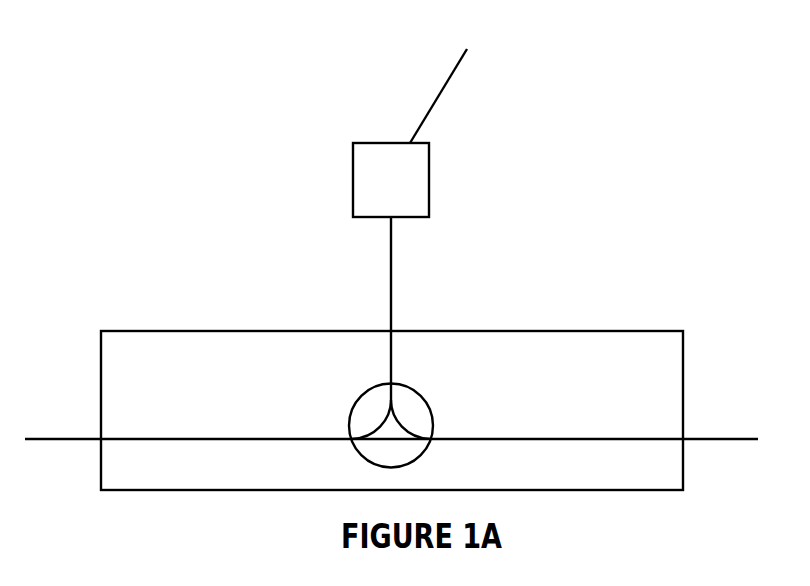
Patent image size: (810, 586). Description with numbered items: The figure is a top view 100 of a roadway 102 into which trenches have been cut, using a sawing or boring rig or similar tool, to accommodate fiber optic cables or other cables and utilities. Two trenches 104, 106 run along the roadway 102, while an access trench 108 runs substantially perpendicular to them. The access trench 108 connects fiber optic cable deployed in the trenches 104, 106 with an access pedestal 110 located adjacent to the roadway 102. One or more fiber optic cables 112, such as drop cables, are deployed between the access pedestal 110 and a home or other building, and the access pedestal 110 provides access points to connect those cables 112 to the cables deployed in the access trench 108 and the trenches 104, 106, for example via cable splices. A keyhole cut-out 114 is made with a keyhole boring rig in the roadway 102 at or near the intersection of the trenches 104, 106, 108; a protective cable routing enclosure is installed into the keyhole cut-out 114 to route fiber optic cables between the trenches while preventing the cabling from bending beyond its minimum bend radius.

The top view 100 is at (229, 97).
The roadway 102 is at (139, 331).
The trench 104 is at (189, 439).
The trench 106 is at (533, 439).
The access trench 108 is at (391, 245).
The access pedestal 110 is at (353, 175).
The fiber optic cable 112 is at (439, 93).
The keyhole cut-out 114 is at (433, 418).